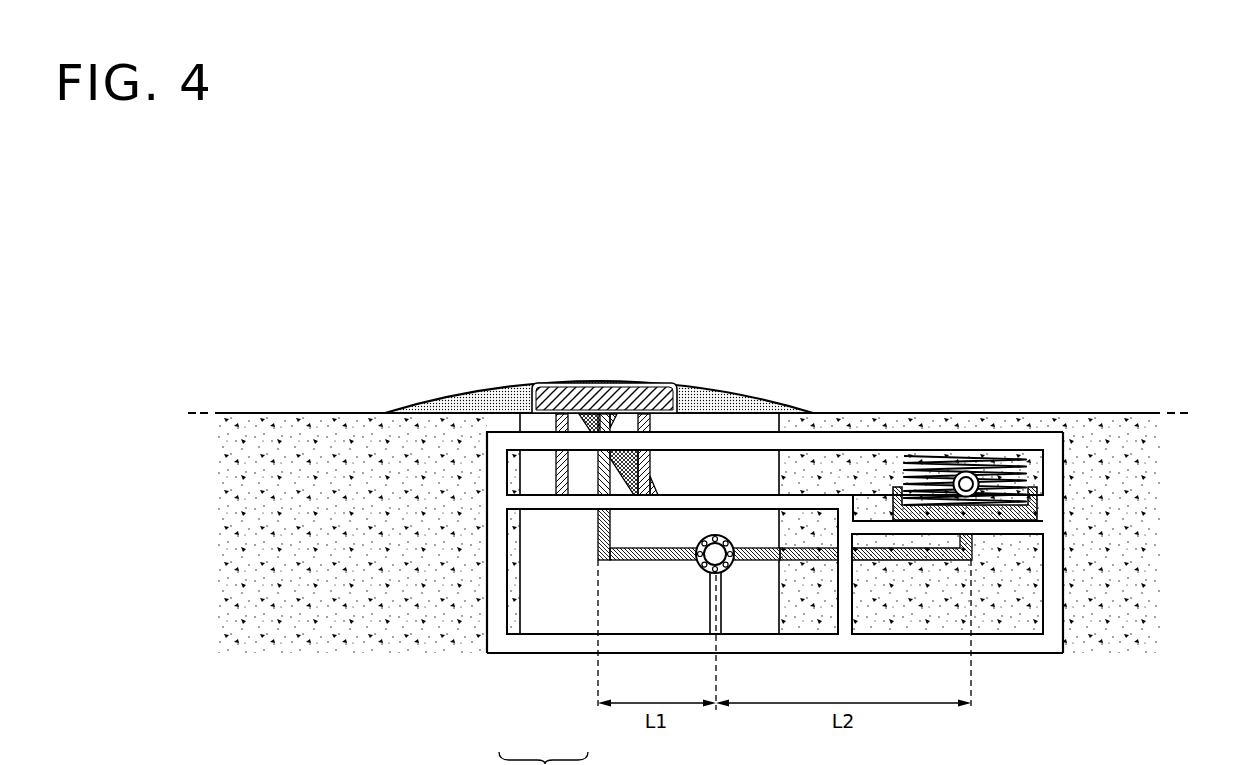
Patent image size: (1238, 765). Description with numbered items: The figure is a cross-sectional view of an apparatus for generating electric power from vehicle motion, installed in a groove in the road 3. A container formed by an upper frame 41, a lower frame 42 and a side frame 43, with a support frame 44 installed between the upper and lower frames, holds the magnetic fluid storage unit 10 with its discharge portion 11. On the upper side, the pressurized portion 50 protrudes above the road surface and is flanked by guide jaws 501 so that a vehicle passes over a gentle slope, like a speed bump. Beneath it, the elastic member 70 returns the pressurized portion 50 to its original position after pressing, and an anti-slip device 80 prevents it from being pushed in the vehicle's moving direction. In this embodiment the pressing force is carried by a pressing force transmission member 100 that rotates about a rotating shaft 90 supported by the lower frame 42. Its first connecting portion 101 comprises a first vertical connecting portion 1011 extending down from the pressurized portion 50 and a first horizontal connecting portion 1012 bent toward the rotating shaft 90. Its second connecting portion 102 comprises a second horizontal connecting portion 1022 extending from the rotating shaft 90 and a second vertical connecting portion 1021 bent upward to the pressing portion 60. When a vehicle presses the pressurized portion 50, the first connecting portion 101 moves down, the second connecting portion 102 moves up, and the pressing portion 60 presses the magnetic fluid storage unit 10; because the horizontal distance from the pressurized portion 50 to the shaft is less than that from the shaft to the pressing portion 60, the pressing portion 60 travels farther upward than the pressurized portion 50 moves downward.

The road 3 is at (320, 413).
The guide jaw 501 is at (480, 397).
The pressurized portion 50 is at (582, 383).
The anti-slip device 80 is at (626, 452).
The elastic member 70 is at (655, 467).
The pressing force transmission member 100 is at (727, 543).
The first connecting portion 101 is at (665, 563).
The first vertical connecting portion 1011 is at (598, 536).
The first horizontal connecting portion 1012 is at (627, 562).
The second connecting portion 102 is at (870, 564).
The second vertical connecting portion 1021 is at (880, 557).
The second horizontal connecting portion 1022 is at (810, 560).
The discharge portion 11 is at (965, 471).
The upper frame 41 is at (987, 440).
The magnetic fluid storage unit 10 is at (1030, 475).
The support frame 44 is at (553, 502).
The rotating shaft 90 is at (702, 570).
The pressing portion 60 is at (925, 512).
The side frame 43 is at (1056, 601).
The lower frame 42 is at (1013, 645).